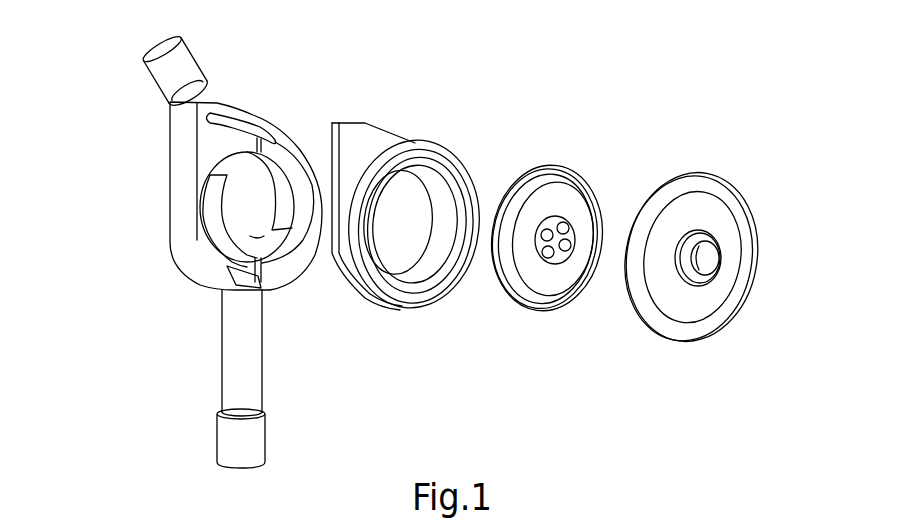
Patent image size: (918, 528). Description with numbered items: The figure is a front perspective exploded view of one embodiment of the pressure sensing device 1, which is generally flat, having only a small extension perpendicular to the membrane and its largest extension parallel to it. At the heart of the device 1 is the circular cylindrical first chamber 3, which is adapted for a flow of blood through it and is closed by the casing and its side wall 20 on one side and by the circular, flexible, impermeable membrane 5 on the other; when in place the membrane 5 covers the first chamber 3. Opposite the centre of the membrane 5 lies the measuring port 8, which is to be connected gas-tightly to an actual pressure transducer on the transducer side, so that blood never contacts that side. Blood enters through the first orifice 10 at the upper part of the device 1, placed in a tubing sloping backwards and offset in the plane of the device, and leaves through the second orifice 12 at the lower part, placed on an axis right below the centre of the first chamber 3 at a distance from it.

The pressure sensing device 1 is at (100, 161).
The first chamber 3 is at (255, 238).
The membrane 5 is at (570, 167).
The measuring port 8 is at (707, 262).
The first orifice 10 is at (160, 42).
The second orifice 12 is at (247, 470).
The side wall 20 is at (240, 201).